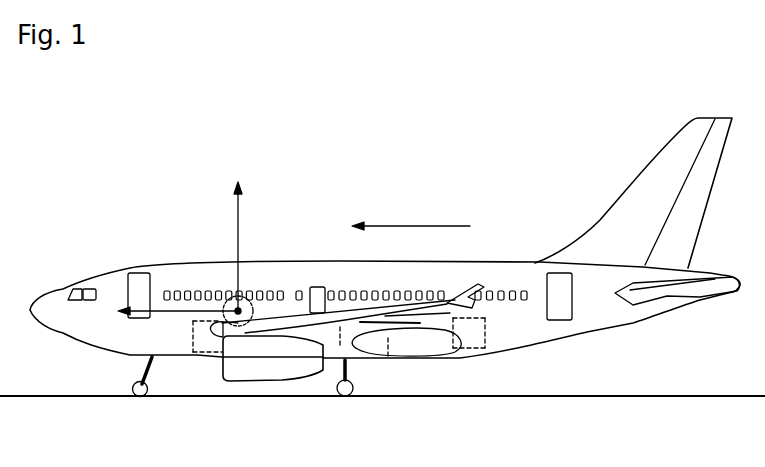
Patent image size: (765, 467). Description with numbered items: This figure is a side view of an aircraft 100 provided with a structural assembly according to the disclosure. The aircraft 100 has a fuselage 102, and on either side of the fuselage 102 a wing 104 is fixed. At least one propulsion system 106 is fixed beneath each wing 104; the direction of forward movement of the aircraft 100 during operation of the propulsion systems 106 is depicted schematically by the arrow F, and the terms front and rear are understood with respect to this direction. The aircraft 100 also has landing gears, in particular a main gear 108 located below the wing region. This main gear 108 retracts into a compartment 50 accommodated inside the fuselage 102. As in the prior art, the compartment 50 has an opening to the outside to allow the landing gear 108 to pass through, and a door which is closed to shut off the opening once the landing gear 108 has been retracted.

The aircraft 100 is at (552, 194).
The fuselage 102 is at (185, 270).
The wing 104 is at (447, 303).
The propulsion system 106 is at (260, 365).
The main gear 108 is at (357, 388).
The compartment 50 is at (377, 350).